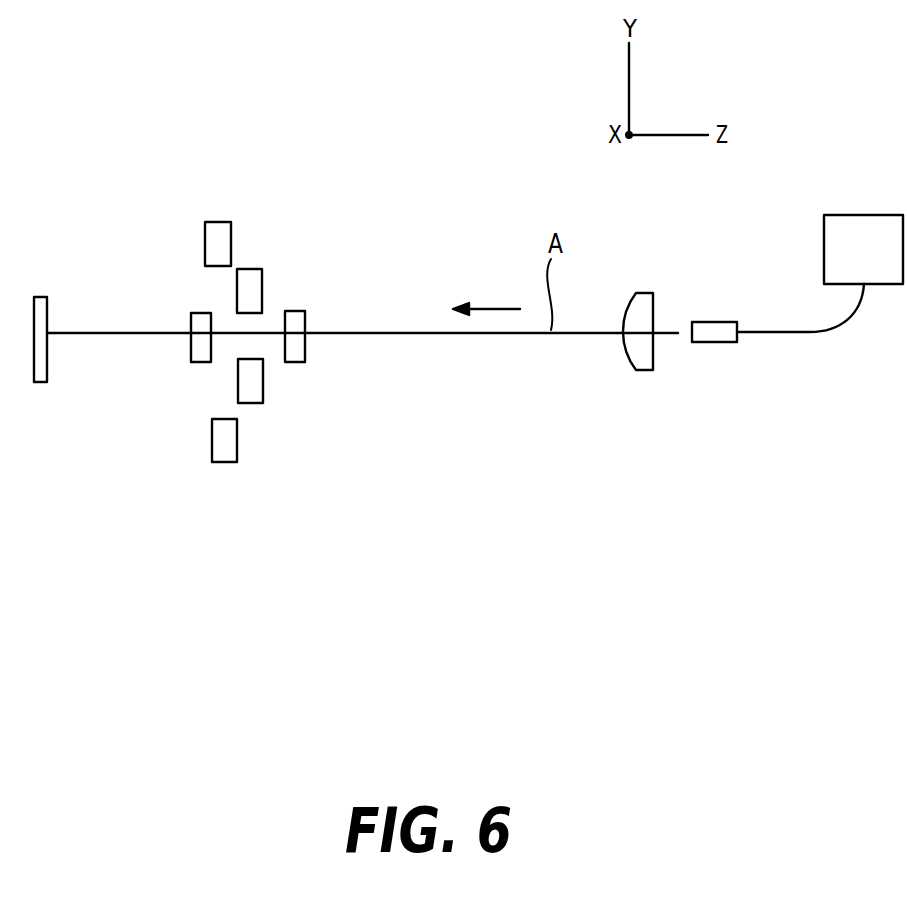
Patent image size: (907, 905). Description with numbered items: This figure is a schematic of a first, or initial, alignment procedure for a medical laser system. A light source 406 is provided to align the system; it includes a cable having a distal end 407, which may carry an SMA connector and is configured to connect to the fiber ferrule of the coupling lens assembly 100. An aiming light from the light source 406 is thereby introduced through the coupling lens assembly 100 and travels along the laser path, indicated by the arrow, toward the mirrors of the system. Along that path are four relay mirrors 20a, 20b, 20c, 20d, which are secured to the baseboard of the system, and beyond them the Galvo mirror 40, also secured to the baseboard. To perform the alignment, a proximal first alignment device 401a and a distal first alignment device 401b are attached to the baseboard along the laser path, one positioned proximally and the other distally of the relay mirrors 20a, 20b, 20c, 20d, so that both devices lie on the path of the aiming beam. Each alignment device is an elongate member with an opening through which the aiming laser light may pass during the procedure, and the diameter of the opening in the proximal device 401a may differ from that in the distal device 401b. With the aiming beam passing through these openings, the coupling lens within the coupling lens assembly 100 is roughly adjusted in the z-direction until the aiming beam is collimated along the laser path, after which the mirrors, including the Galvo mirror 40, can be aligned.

The Galvo mirror 40 is at (47, 375).
The proximal first alignment device 401a is at (191, 322).
The distal first alignment device 401b is at (307, 325).
The relay mirror 20a is at (218, 227).
The relay mirror 20b is at (250, 287).
The relay mirror 20c is at (255, 395).
The relay mirror 20d is at (230, 450).
The coupling lens assembly 100 is at (653, 363).
The light source 406 is at (865, 213).
The distal end 407 is at (730, 322).